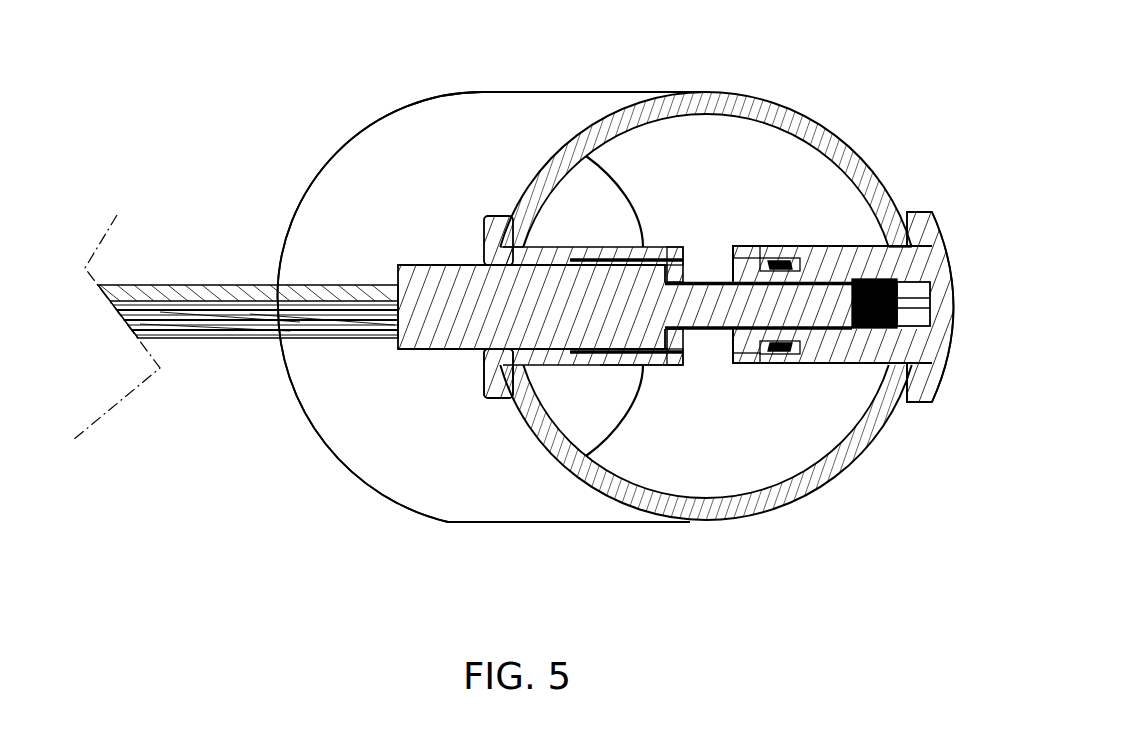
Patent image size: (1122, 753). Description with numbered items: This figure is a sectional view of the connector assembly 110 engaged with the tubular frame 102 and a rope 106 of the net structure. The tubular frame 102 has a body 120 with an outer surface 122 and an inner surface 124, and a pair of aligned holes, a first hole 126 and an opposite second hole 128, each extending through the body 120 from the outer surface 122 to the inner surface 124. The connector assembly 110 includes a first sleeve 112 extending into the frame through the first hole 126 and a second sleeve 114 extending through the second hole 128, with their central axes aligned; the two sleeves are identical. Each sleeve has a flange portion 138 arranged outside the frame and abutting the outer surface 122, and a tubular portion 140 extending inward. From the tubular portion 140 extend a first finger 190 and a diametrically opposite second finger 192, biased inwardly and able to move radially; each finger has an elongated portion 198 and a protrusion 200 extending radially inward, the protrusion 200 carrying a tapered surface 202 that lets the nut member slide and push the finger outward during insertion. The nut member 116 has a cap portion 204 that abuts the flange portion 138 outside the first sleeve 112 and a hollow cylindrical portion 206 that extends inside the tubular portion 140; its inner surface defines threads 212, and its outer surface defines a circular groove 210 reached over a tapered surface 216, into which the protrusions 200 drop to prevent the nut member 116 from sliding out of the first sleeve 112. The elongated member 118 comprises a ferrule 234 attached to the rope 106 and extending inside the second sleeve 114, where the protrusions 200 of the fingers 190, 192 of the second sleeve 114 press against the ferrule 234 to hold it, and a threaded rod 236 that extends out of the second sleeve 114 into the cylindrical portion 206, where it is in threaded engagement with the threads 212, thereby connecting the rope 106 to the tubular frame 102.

The tubular frame 102 is at (565, 95).
The rope 106 is at (205, 340).
The connector assembly 110 is at (913, 198).
The first sleeve 112 is at (834, 372).
The second sleeve 114 is at (481, 390).
The nut member 116 is at (962, 313).
The elongated member 118 is at (437, 358).
The body 120 is at (847, 155).
The outer surface 122 is at (388, 179).
The inner surface 124 is at (638, 154).
The first hole 126 is at (873, 237).
The second hole 128 is at (537, 233).
The flange portion 138 is at (505, 216).
The tubular portion 140 is at (536, 245).
The first finger 190 is at (830, 363).
The second finger 192 is at (757, 248).
The elongated portion 198 is at (683, 368).
The protrusion 200 is at (632, 366).
The tapered surface 202 is at (630, 348).
The cap portion 204 is at (933, 373).
The hollow cylindrical portion 206 is at (861, 332).
The groove 210 is at (780, 261).
The threads 212 is at (905, 296).
The tapered surface 216 is at (747, 250).
The ferrule 234 is at (462, 352).
The threaded rod 236 is at (713, 295).